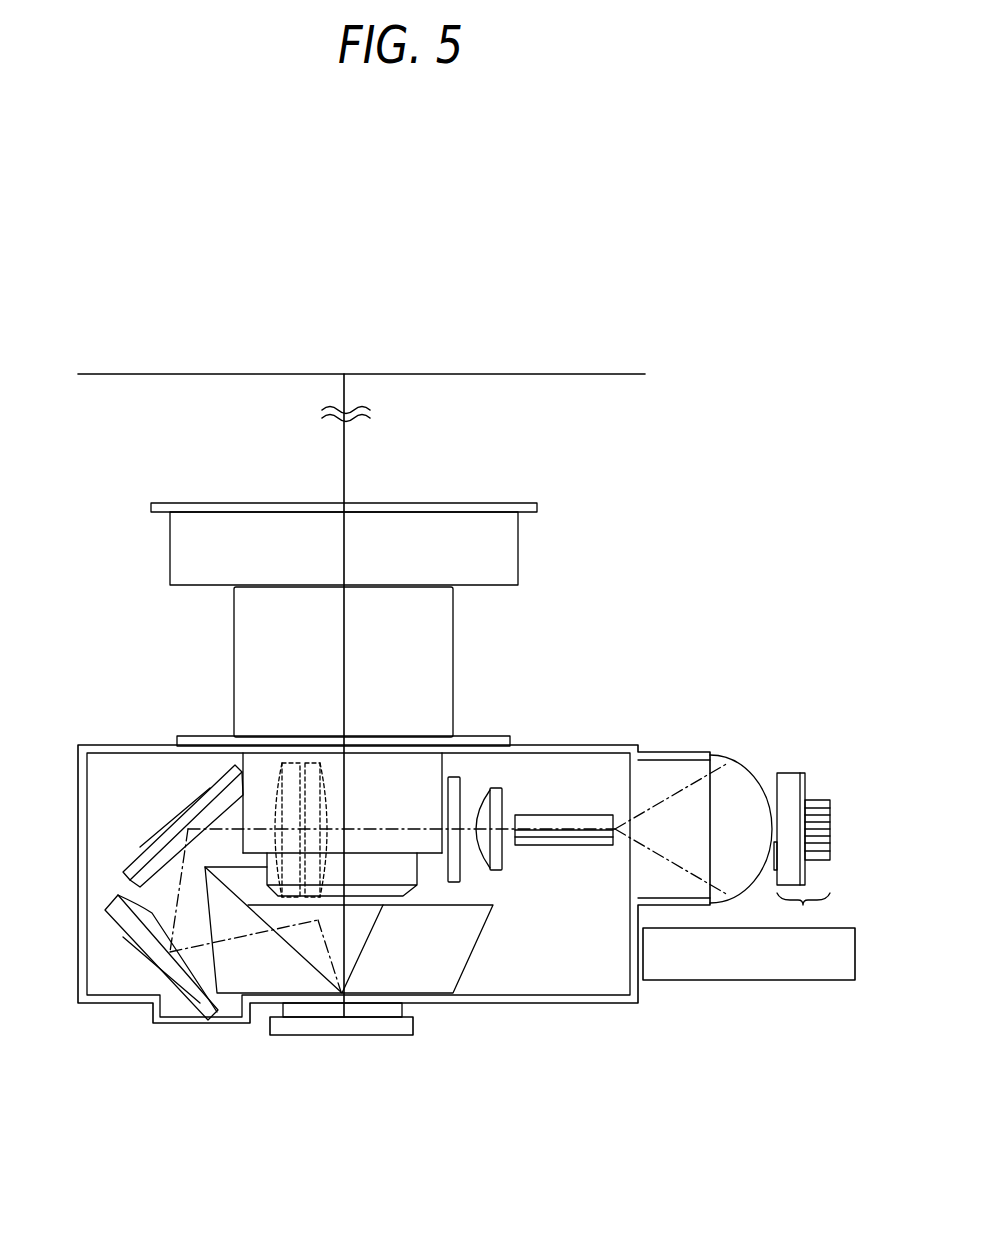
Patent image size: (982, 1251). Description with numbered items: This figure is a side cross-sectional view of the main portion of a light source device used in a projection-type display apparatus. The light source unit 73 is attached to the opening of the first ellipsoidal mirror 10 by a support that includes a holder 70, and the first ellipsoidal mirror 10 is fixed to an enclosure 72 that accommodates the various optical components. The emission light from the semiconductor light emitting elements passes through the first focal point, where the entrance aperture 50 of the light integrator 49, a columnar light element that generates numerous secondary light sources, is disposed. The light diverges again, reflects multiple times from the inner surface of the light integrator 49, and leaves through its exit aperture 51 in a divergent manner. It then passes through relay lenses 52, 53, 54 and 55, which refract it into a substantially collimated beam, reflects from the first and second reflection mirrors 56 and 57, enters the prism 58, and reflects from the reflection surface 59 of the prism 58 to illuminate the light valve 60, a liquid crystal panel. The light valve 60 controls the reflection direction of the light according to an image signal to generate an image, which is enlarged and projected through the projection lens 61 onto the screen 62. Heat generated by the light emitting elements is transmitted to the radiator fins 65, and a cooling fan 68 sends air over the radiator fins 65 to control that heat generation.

The first ellipsoidal mirror 10 is at (750, 760).
The light integrator 49 is at (593, 846).
The entrance aperture 50 is at (565, 815).
The exit aperture 51 is at (505, 846).
The relay lens 52 is at (498, 778).
The relay lens 53 is at (453, 778).
The relay lens 54 is at (313, 762).
The relay lens 55 is at (290, 762).
The first reflection mirror 56 is at (167, 815).
The second reflection mirror 57 is at (128, 950).
The prism 58 is at (248, 980).
The reflection surface 59 is at (313, 972).
The light valve 60 is at (380, 1036).
The projection lens 61 is at (233, 628).
The screen 62 is at (115, 376).
The radiator fins 65 is at (820, 800).
The cooling fan 68 is at (750, 980).
The holder 70 is at (797, 772).
The enclosure 72 is at (132, 743).
The light source unit 73 is at (803, 905).